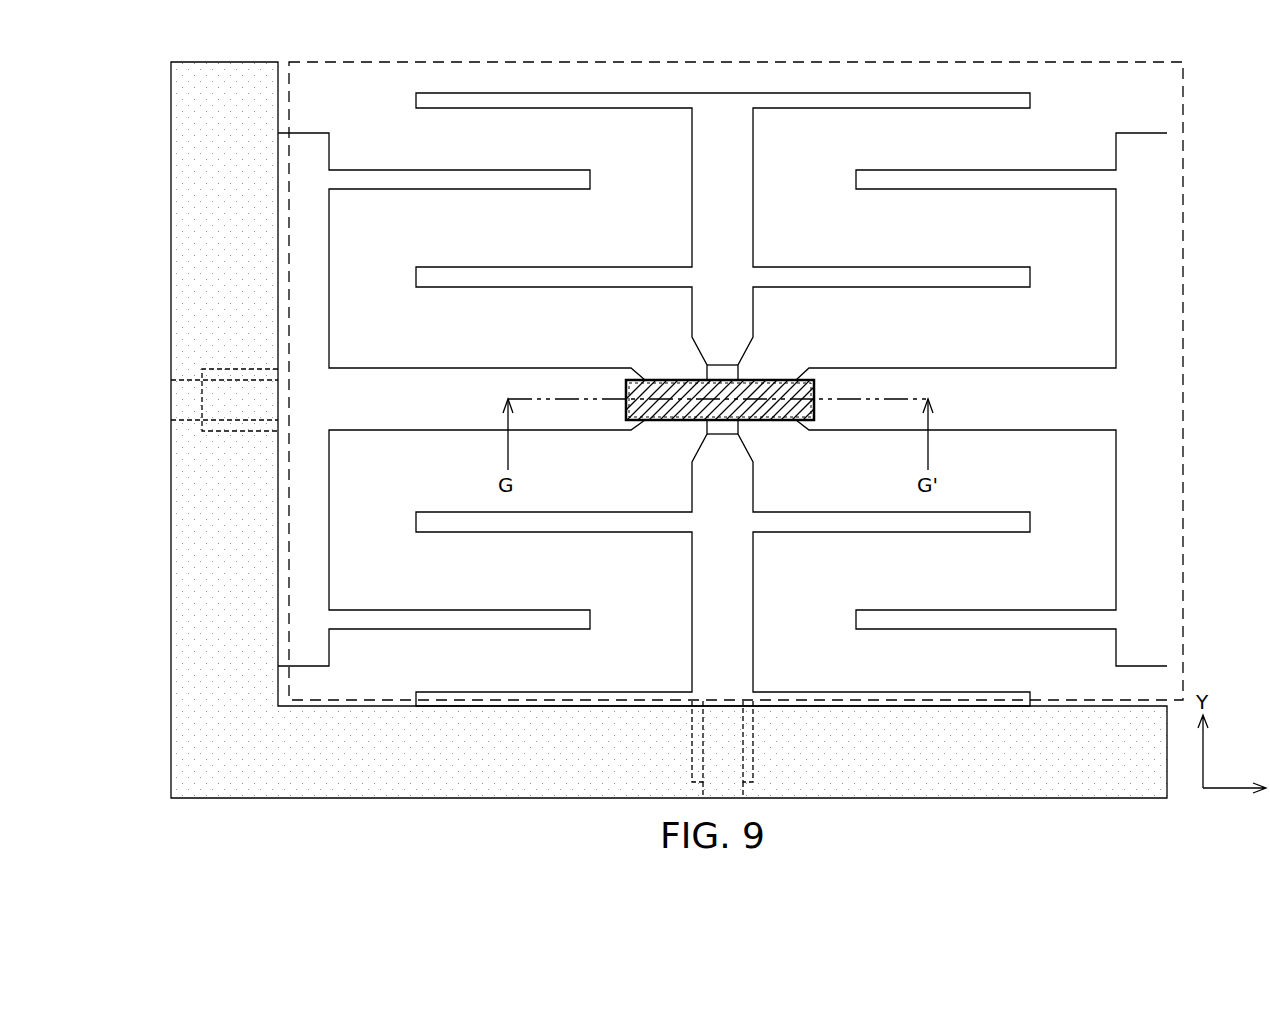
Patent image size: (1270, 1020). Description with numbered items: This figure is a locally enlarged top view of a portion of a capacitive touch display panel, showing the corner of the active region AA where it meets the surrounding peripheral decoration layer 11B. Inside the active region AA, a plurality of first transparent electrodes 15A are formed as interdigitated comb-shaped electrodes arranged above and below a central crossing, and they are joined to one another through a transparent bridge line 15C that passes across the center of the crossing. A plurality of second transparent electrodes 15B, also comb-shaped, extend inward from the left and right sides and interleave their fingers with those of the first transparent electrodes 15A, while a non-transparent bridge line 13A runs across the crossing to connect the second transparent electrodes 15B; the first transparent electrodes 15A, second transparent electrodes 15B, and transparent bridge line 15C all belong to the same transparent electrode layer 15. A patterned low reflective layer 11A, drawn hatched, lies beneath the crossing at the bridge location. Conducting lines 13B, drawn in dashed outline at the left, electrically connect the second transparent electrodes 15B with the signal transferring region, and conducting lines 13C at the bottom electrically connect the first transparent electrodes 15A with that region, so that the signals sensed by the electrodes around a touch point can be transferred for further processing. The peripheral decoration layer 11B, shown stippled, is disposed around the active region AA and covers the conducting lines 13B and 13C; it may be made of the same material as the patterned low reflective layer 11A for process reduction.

The patterned low reflective layer 11A is at (792, 420).
The peripheral decoration layer 11B is at (245, 222).
The non-transparent bridge line 13A is at (757, 416).
The conducting line 13B is at (245, 410).
The conducting line 13C is at (743, 762).
The transparent electrode layer 15 is at (731, 399).
The first transparent electrode 15A is at (737, 241).
The second transparent electrode 15B is at (323, 662).
The transparent bridge line 15C is at (740, 367).
The active region AA is at (1183, 80).